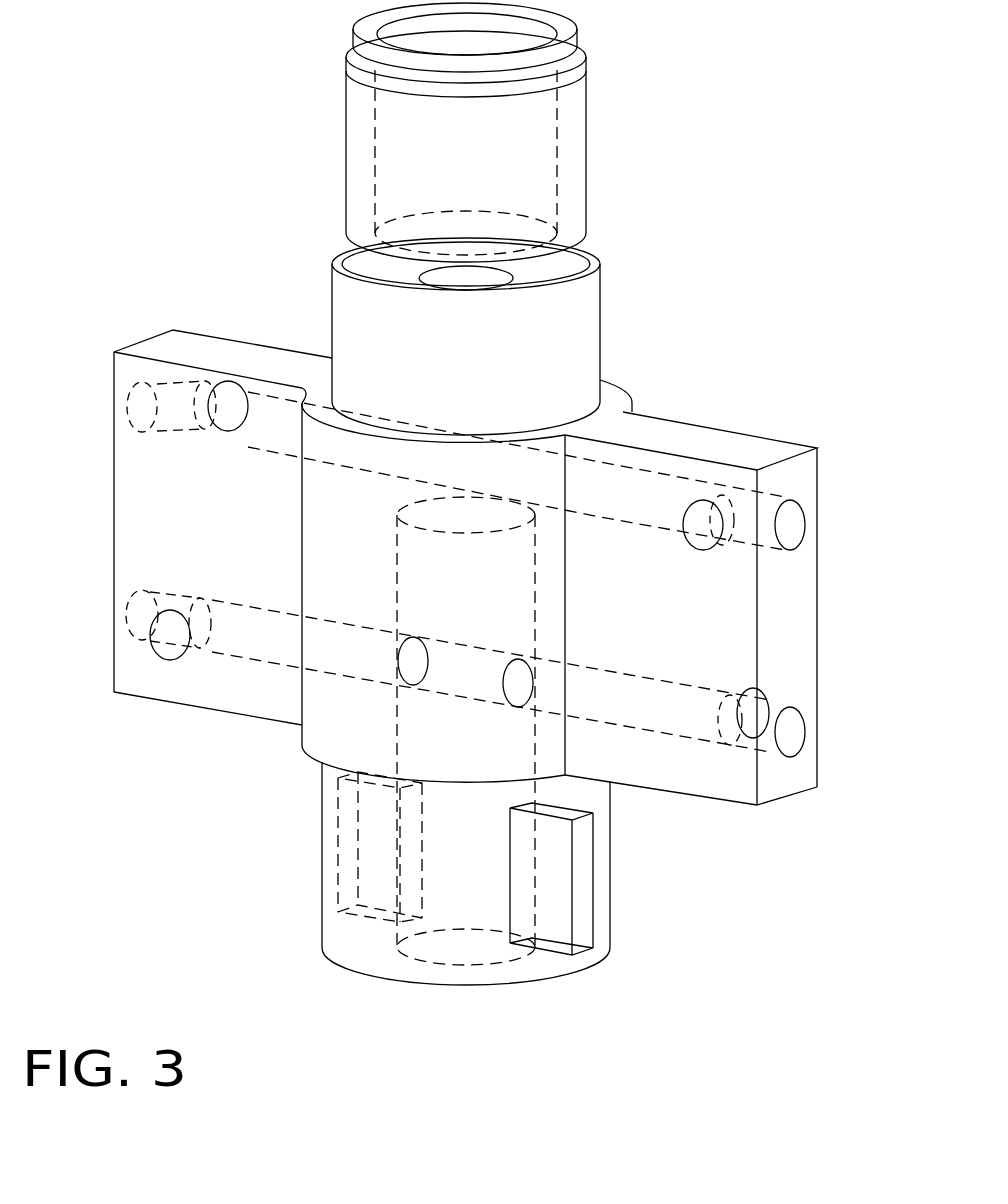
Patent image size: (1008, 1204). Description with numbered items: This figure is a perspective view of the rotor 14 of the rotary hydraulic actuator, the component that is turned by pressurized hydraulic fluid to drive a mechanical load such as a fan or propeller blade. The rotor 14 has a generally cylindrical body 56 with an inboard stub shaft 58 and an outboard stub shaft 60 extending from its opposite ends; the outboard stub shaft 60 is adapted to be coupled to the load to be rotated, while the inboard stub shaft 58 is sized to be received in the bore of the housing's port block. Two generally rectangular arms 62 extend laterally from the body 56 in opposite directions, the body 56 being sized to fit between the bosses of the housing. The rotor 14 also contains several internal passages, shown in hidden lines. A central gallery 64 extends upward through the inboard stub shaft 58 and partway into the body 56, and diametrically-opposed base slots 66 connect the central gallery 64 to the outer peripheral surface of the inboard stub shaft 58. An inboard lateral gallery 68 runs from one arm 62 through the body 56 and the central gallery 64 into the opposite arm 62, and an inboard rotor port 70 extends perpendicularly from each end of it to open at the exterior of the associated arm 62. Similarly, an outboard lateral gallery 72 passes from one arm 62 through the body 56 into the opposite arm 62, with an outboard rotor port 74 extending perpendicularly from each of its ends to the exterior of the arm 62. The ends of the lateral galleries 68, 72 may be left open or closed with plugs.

The rotor 14 is at (710, 132).
The body 56 is at (615, 395).
The inboard stub shaft 58 is at (330, 935).
The outboard stub shaft 60 is at (569, 125).
The arms 62 is at (190, 345).
The central gallery 64 is at (397, 732).
The base slots 66 is at (338, 845).
The inboard lateral gallery 68 is at (264, 666).
The inboard rotor port 70 is at (158, 643).
The outboard lateral gallery 72 is at (629, 462).
The outboard rotor port 74 is at (200, 430).